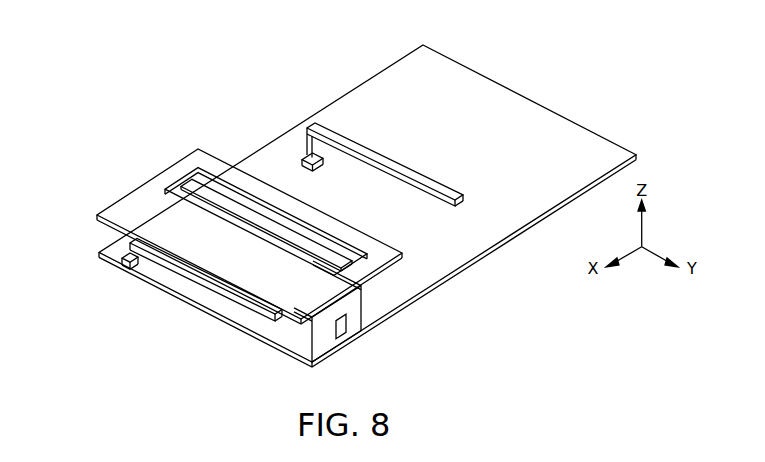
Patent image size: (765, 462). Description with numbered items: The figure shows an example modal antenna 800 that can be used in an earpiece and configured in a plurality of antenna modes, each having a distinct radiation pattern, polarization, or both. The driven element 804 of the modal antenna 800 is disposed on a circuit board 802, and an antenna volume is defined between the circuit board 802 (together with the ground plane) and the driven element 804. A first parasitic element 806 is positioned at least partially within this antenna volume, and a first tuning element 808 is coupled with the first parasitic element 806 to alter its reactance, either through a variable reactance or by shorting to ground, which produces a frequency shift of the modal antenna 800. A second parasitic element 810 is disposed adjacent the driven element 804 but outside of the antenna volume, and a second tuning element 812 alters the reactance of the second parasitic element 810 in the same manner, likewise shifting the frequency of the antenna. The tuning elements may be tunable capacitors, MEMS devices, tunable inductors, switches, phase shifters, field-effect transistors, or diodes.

The modal antenna 800 is at (121, 80).
The circuit board 802 is at (344, 90).
The driven element 804 is at (140, 183).
The first parasitic element 806 is at (233, 300).
The first tuning element 808 is at (126, 262).
The second parasitic element 810 is at (412, 166).
The second tuning element 812 is at (322, 168).